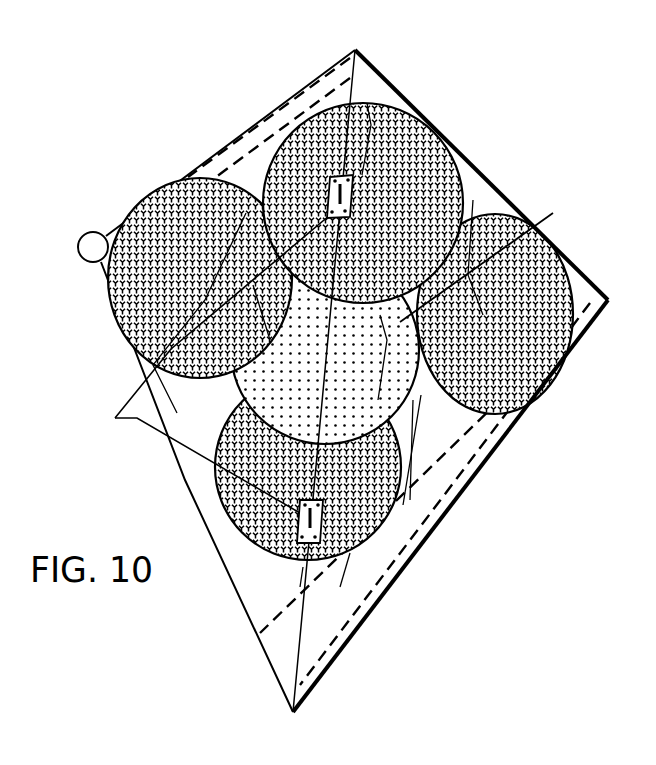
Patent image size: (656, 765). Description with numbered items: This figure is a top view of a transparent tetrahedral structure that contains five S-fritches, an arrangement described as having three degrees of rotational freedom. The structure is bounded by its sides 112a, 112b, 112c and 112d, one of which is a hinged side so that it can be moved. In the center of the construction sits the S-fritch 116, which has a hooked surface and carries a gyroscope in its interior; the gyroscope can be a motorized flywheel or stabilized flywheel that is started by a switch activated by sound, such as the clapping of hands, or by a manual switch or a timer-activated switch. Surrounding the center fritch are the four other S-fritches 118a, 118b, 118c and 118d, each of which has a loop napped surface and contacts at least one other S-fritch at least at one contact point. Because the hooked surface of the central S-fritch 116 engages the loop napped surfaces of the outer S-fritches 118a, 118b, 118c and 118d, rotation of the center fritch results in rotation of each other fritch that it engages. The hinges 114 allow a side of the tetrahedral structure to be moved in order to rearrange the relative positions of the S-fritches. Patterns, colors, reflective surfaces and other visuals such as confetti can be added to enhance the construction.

The side of transparent tetrahedral structure 112a is at (473, 200).
The side of transparent tetrahedral structure 112b is at (250, 143).
The side of transparent tetrahedral structure 112c is at (433, 498).
The side of transparent tetrahedral structure 112d is at (378, 70).
The hinges 114 is at (115, 418).
The S-fritch 116 is at (400, 322).
The S-fritch 118a is at (388, 588).
The S-fritch 118b is at (557, 368).
The S-fritch 118c is at (103, 263).
The S-fritch 118d is at (420, 117).